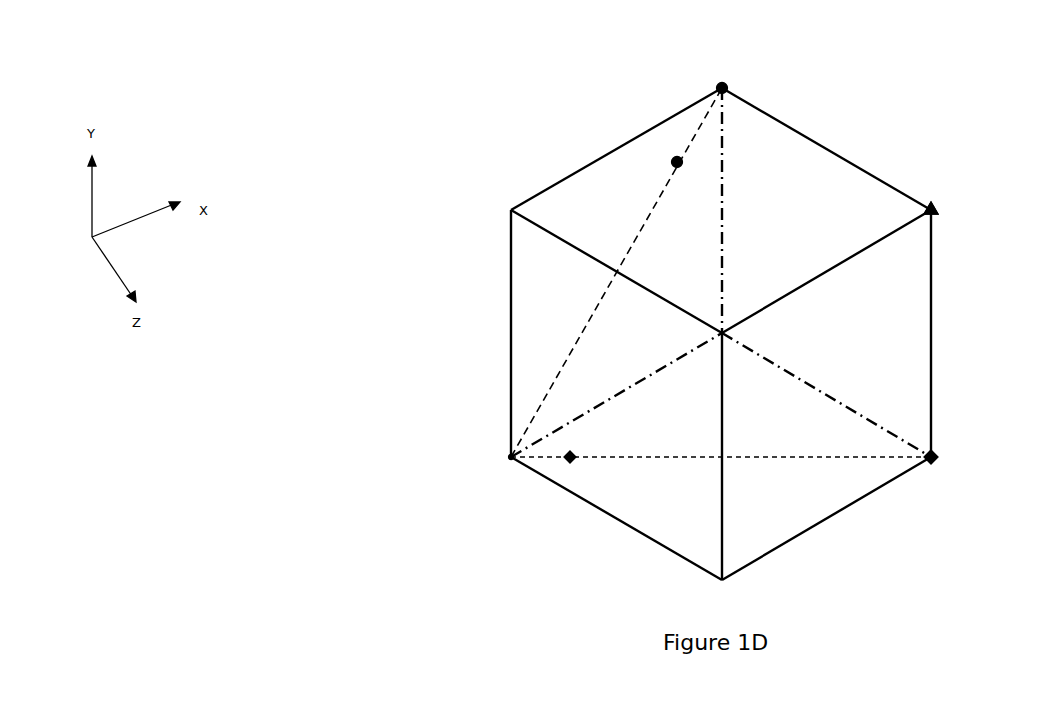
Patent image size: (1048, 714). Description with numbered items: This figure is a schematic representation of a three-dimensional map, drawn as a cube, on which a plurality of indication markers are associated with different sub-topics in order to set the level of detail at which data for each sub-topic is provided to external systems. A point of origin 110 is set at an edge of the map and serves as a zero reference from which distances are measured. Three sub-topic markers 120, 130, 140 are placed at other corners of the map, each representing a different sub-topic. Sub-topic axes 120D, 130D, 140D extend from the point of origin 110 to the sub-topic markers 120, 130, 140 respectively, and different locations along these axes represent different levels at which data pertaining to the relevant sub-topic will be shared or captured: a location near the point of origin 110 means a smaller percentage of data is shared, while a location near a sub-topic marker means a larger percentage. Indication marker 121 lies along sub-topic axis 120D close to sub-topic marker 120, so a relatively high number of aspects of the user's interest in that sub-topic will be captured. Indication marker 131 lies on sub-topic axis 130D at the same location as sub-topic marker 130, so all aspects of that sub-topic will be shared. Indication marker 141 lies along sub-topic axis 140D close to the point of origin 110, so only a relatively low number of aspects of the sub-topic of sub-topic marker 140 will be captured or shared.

The point of origin 110 is at (510, 458).
The sub-topic marker 120 is at (720, 83).
The sub-topic axis 120D is at (688, 143).
The indication marker 121 is at (672, 157).
The sub-topic marker 130 is at (938, 206).
The indication marker 131 is at (940, 213).
The sub-topic axis 130D is at (603, 400).
The sub-topic marker 140 is at (937, 453).
The sub-topic axis 140D is at (783, 457).
The indication marker 141 is at (567, 462).